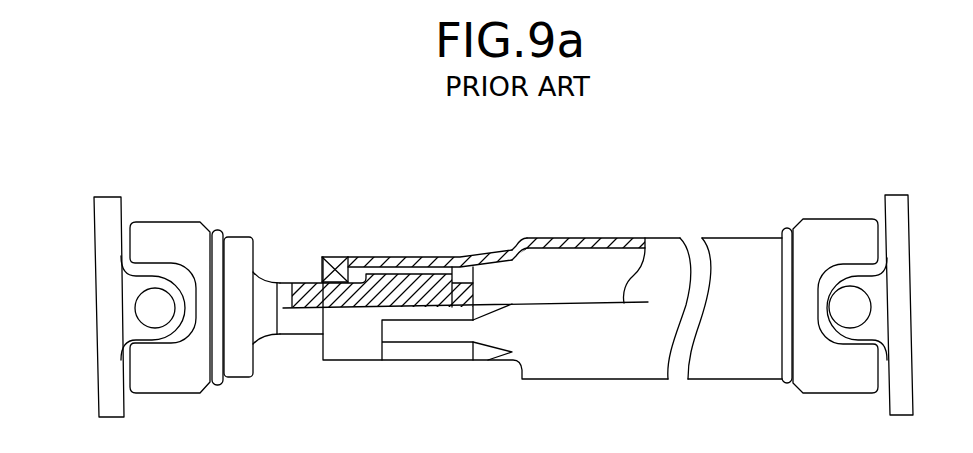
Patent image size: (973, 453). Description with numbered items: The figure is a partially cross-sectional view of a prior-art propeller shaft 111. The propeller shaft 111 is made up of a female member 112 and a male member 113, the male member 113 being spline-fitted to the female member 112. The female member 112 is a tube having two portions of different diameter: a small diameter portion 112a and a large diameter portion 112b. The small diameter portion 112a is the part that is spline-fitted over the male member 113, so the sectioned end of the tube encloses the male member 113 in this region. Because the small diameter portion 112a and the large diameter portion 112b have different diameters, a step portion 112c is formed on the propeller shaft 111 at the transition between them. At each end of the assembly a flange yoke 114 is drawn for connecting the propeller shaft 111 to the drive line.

The propeller shaft 111 is at (546, 203).
The female member 112 is at (625, 233).
The small diameter portion 112a is at (406, 256).
The large diameter portion 112b is at (662, 236).
The step portion 112c is at (513, 250).
The male member 113 is at (294, 279).
The flange yoke 114 is at (108, 203).